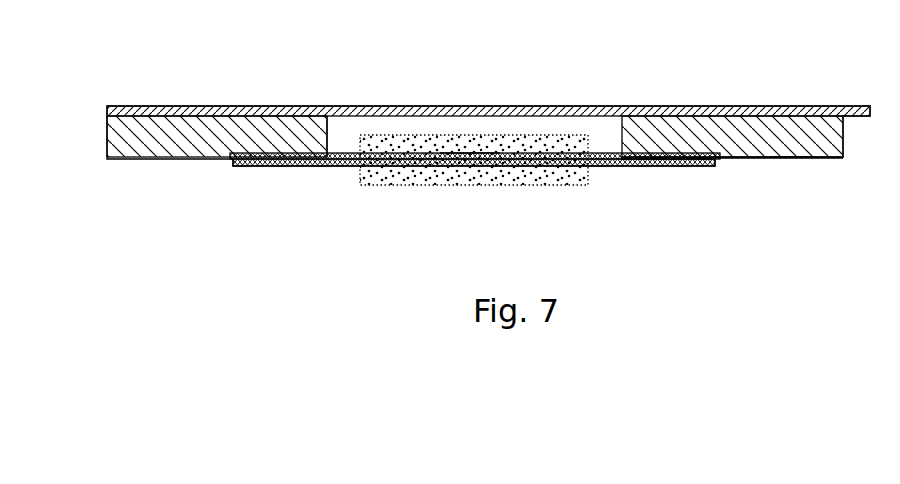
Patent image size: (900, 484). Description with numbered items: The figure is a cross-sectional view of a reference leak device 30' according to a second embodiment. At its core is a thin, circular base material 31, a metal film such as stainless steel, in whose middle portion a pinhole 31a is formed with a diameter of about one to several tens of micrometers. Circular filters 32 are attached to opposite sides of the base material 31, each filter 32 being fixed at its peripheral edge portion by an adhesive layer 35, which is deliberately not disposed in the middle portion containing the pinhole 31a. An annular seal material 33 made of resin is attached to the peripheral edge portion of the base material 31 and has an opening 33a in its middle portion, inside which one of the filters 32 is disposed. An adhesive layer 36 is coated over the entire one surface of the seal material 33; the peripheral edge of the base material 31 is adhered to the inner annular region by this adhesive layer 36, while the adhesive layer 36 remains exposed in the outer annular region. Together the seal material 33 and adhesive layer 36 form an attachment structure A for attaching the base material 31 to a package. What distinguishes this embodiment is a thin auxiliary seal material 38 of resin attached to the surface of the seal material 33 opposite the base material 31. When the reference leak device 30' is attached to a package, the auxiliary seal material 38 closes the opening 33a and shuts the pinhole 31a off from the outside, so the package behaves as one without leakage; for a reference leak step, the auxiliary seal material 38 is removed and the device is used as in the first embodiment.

The reference leak device 30' is at (488, 99).
The base material 31 is at (612, 161).
The pinhole 31a is at (472, 153).
The filter 32 is at (505, 147).
The seal material 33 is at (680, 130).
The opening 33a is at (327, 132).
The adhesive layer 35 is at (563, 157).
The adhesive layer 36 is at (745, 158).
The auxiliary seal material 38 is at (338, 107).
The attachment structure A is at (791, 161).